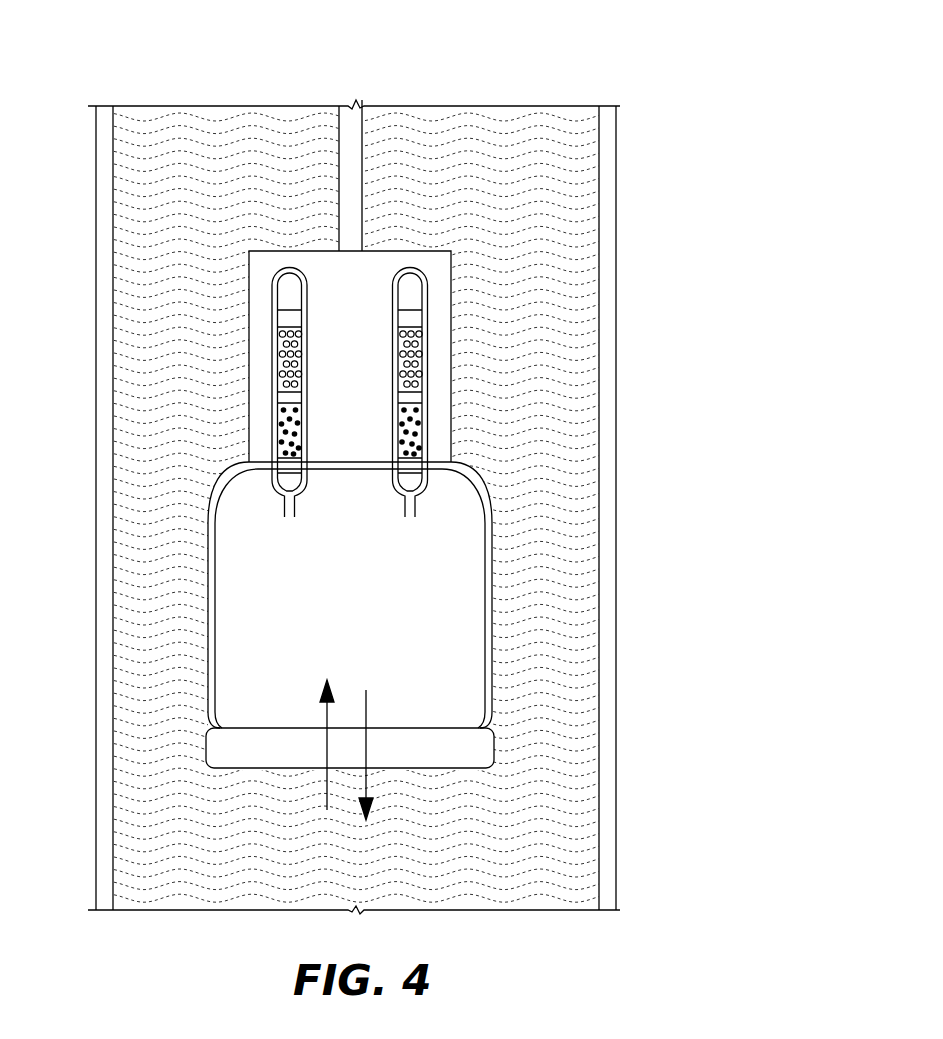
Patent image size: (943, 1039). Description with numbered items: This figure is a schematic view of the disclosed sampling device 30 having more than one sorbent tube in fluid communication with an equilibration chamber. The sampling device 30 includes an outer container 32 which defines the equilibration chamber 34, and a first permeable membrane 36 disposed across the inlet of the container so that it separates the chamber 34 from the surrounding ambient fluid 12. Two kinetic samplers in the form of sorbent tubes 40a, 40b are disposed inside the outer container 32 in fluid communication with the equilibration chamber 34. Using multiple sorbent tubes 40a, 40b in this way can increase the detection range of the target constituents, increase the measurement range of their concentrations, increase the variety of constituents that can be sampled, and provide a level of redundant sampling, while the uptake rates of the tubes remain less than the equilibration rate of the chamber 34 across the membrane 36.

The sampling device 30 is at (622, 96).
The ambient fluid 12 is at (152, 172).
The outer container 32 is at (208, 582).
The equilibration chamber 34 is at (484, 684).
The first permeable membrane 36 is at (217, 768).
The sorbent tube 40a is at (272, 385).
The sorbent tube 40b is at (428, 386).